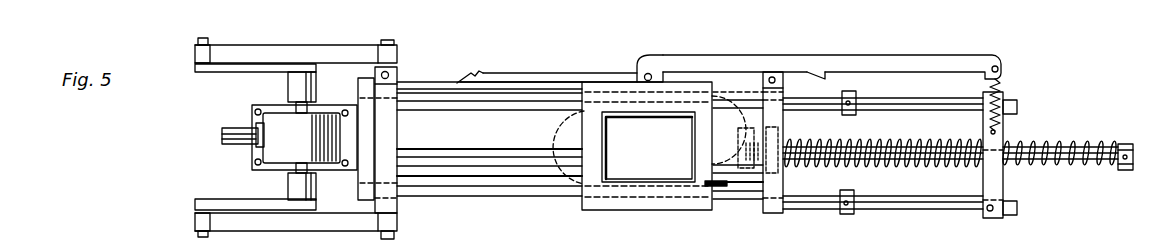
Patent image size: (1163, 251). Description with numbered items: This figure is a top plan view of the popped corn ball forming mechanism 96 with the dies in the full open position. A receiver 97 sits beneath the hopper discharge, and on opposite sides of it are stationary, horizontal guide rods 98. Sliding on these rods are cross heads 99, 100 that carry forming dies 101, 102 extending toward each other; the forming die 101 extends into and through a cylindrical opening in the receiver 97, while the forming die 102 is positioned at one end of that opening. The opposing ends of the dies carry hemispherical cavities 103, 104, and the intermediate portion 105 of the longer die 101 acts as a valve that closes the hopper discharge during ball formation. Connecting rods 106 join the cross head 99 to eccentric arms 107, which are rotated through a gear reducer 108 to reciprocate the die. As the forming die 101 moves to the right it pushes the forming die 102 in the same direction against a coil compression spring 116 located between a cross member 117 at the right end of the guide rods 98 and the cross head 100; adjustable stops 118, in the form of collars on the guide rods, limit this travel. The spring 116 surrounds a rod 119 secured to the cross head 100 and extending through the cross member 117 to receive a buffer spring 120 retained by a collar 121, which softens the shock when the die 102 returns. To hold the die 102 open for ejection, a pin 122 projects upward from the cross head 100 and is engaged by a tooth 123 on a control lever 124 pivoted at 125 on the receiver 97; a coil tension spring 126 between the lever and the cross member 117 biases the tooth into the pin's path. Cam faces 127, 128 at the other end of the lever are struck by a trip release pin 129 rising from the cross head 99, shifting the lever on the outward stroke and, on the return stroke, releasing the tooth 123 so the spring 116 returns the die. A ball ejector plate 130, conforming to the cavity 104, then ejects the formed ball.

The popped corn ball forming mechanism 96 is at (1062, 85).
The receiver 97 is at (606, 195).
The guide rods 98 is at (937, 104).
The cross head 99 is at (392, 127).
The cross head 100 is at (784, 125).
The forming die 101 is at (437, 165).
The forming die 102 is at (749, 118).
The hemispherical cavity 103 is at (552, 126).
The hemispherical cavity 104 is at (724, 180).
The intermediate portion 105 is at (523, 165).
The connecting rods 106 is at (303, 48).
The eccentric arms 107 is at (217, 67).
The gear reducer 108 is at (277, 128).
The coil compression spring 116 is at (818, 157).
The cross member 117 is at (1004, 185).
The adjustable stops 118 is at (856, 99).
The rod 119 is at (893, 160).
The buffer spring 120 is at (1049, 158).
The collar 121 is at (1127, 146).
The pin 122 is at (774, 77).
The tooth 123 is at (820, 74).
The control lever 124 is at (931, 62).
The pivot 125 is at (643, 74).
The coil tension spring 126 is at (1003, 84).
The cam face 127 is at (458, 77).
The cam face 128 is at (474, 72).
The trip release pin 129 is at (393, 72).
The ball ejector plate 130 is at (692, 146).